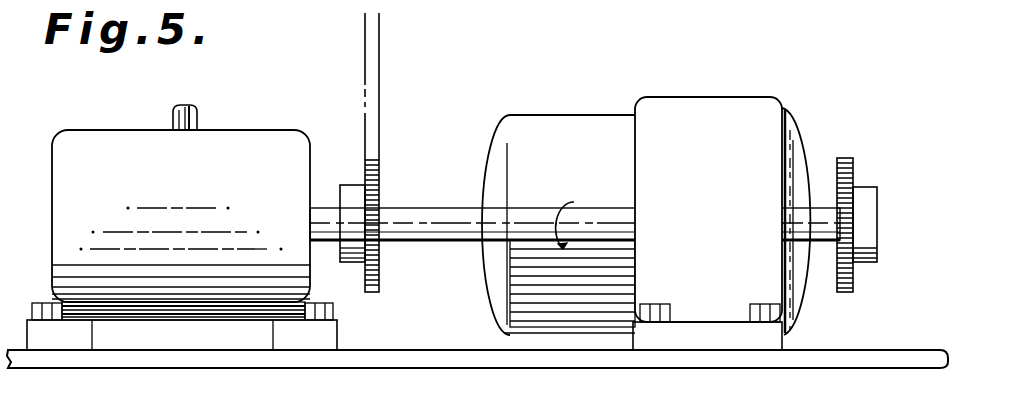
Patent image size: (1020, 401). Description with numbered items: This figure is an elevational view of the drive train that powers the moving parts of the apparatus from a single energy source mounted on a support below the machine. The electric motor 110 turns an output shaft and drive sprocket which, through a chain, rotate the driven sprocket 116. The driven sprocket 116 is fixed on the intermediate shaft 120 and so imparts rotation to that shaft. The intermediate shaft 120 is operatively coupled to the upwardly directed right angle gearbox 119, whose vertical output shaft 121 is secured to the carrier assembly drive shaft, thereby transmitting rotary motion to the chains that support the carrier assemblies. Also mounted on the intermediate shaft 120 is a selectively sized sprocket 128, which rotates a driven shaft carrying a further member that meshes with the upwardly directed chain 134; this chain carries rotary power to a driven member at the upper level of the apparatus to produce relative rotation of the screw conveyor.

The electric motor 110 is at (714, 97).
The driven sprocket 116 is at (852, 158).
The right angle gearbox 119 is at (272, 130).
The intermediate shaft 120 is at (688, 208).
The vertical output shaft 121 is at (197, 116).
The selectively sized sprocket 128 is at (371, 293).
The upwardly directed chain 134 is at (380, 73).